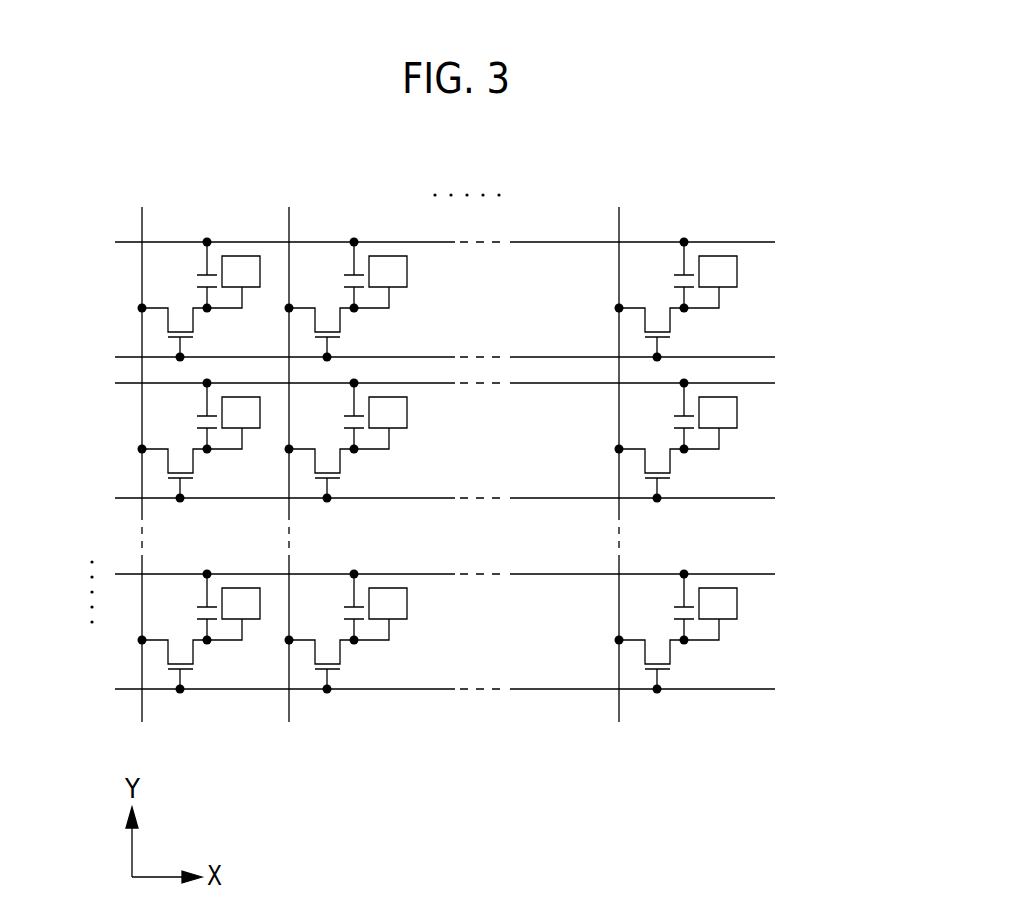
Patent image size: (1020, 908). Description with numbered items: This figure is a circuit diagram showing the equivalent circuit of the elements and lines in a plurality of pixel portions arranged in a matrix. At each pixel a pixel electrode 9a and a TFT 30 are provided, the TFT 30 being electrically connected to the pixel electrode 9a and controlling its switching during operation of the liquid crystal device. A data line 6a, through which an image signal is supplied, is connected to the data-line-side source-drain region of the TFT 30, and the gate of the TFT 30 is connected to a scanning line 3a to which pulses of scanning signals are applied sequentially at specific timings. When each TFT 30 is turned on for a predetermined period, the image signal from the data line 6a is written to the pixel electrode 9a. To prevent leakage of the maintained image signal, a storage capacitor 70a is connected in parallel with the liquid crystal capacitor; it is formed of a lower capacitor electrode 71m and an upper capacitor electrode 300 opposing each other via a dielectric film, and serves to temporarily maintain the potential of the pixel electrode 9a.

The data line 6a is at (144, 222).
The scanning line 3a is at (762, 357).
The upper capacitor electrode 300 is at (762, 244).
The storage capacitor 70a is at (193, 285).
The lower capacitor electrode 71m is at (690, 288).
The pixel electrode 9a is at (738, 286).
The TFT 30 is at (163, 323).